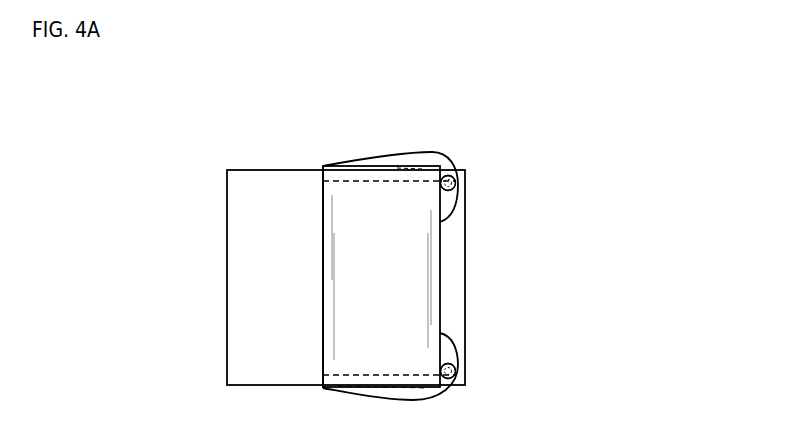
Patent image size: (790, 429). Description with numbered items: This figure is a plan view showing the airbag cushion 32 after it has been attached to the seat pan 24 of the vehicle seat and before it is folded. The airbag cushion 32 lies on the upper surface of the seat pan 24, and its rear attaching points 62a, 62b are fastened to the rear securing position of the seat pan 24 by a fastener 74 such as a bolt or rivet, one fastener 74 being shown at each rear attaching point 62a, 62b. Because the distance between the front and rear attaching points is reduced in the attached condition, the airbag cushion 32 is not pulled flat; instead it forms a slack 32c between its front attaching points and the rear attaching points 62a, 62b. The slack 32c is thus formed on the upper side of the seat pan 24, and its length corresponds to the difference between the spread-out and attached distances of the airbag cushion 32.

The seat pan 24 is at (238, 282).
The airbag cushion 32 is at (387, 158).
The slack 32c is at (330, 211).
The rear attaching point 62a is at (456, 181).
The rear attaching point 62b is at (456, 372).
The fastener 74 is at (450, 192).